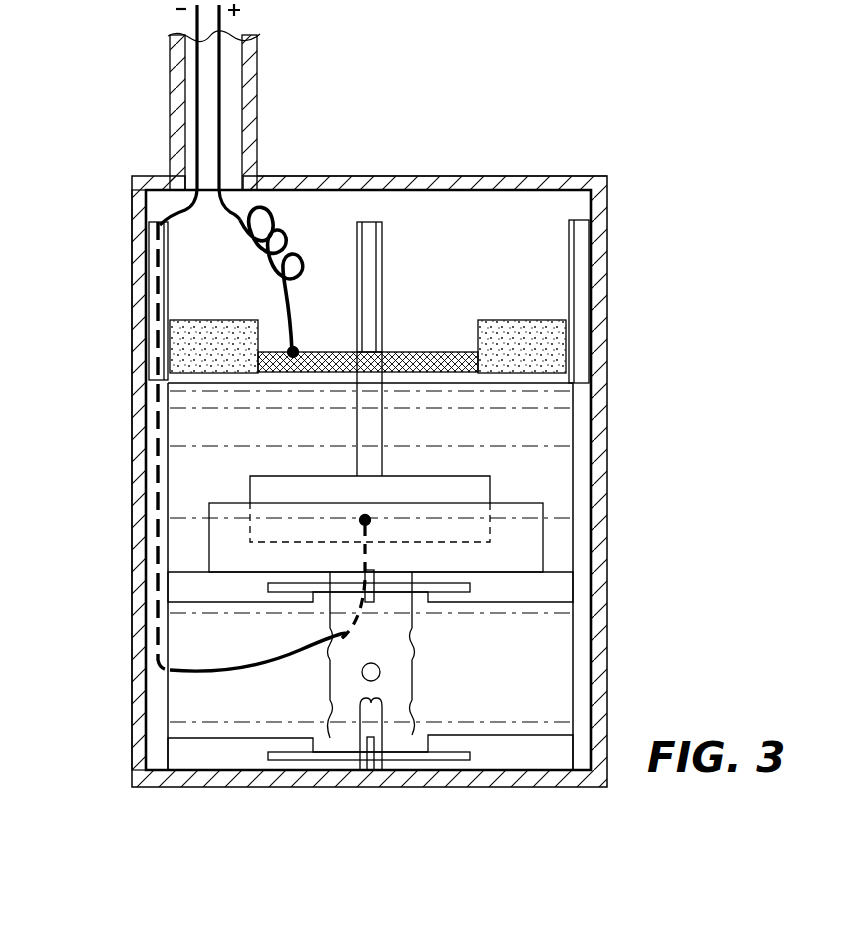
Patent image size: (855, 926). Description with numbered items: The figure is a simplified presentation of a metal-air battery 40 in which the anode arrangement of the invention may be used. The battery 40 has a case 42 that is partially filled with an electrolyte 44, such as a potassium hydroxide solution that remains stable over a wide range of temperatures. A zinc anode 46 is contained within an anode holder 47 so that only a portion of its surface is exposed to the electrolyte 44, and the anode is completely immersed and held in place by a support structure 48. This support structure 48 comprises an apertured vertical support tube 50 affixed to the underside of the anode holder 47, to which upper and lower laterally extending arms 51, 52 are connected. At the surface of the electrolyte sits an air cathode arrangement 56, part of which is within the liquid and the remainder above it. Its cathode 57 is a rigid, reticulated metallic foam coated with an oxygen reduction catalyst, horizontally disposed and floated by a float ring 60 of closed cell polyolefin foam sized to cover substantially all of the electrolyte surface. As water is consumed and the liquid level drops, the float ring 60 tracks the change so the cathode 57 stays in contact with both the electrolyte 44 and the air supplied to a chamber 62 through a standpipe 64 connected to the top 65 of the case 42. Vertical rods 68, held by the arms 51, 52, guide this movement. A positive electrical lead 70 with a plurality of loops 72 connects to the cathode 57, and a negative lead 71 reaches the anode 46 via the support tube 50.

The metal-air battery 40 is at (50, 439).
The case 42 is at (136, 540).
The electrolyte 44 is at (168, 427).
The anode 46 is at (415, 486).
The anode holder 47 is at (505, 503).
The support structure 48 is at (418, 677).
The apertured vertical support tube 50 is at (336, 676).
The upper laterally extending arm 51 is at (488, 590).
The lower laterally extending arm 52 is at (488, 742).
The air cathode arrangement 56 is at (440, 316).
The air cathode 57 is at (327, 352).
The float ring 60 is at (522, 326).
The chamber 62 is at (502, 222).
The standpipe 64 is at (170, 116).
The top of case 65 is at (398, 176).
The vertical rods 68 is at (170, 262).
The positive electrical lead 70 is at (257, 34).
The negative electrical lead 71 is at (190, 37).
The loops 72 is at (297, 260).